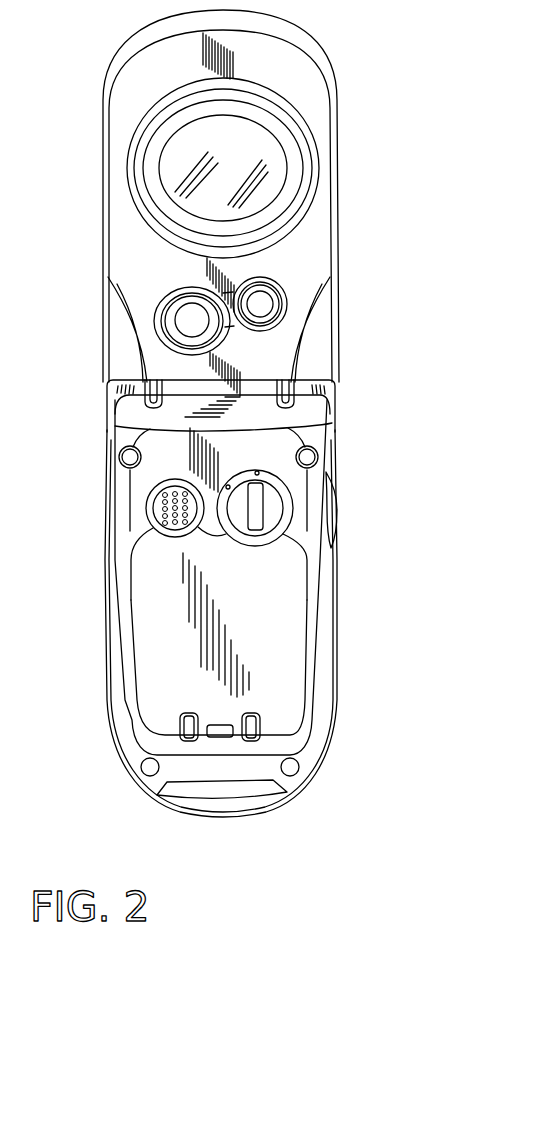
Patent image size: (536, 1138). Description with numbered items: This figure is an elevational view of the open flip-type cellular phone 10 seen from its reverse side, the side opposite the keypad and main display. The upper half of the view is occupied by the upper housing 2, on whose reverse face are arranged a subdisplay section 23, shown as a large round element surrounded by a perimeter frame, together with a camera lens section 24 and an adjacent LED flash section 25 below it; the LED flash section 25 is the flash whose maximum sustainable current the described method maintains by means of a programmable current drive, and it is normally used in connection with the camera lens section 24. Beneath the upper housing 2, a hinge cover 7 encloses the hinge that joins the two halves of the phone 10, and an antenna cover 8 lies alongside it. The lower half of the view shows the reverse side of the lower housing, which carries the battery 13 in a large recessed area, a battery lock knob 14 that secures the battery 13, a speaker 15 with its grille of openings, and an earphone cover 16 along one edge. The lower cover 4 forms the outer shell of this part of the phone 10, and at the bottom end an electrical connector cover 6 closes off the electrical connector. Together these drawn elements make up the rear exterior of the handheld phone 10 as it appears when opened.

The upper housing 2 is at (325, 237).
The lower cover 4 is at (335, 667).
The electrical connector cover 6 is at (190, 813).
The hinge cover 7 is at (335, 402).
The antenna cover 8 is at (313, 418).
The cellular phone 10 is at (223, 434).
The battery 13 is at (147, 690).
The battery lock knob 14 is at (263, 508).
The speaker 15 is at (157, 512).
The earphone cover 16 is at (332, 522).
The subdisplay section 23 is at (180, 178).
The camera lens section 24 is at (180, 320).
The LED flash section 25 is at (267, 305).